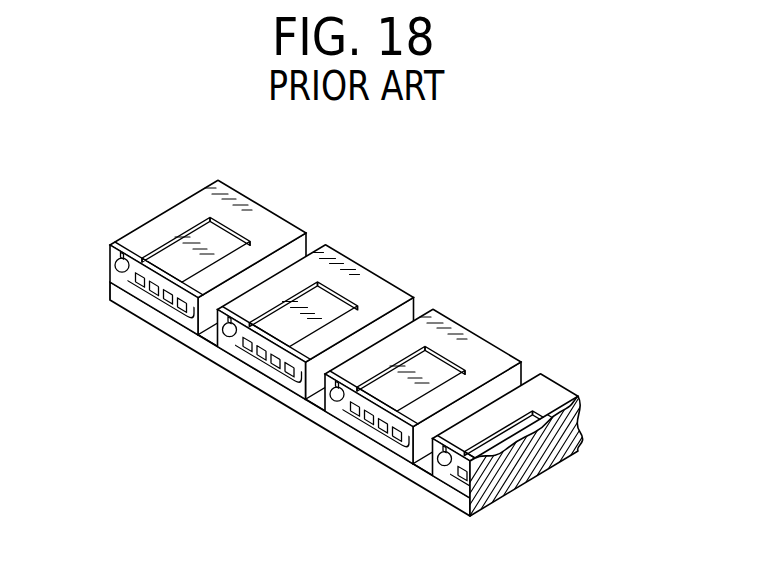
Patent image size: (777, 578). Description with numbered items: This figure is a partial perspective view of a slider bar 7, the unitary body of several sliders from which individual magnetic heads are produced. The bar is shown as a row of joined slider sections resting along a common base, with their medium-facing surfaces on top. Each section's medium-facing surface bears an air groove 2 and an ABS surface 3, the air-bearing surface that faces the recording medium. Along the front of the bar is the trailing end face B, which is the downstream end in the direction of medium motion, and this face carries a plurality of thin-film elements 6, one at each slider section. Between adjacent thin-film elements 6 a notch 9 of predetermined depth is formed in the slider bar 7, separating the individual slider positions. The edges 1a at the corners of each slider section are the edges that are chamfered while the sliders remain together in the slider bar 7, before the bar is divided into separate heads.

The edge 1a is at (124, 256).
The air groove 2 is at (190, 237).
The ABS surface 3 is at (162, 225).
The thin-film element 6 is at (143, 298).
The slider bar 7 is at (212, 365).
The notch 9 is at (207, 333).
The trailing end face B is at (321, 436).